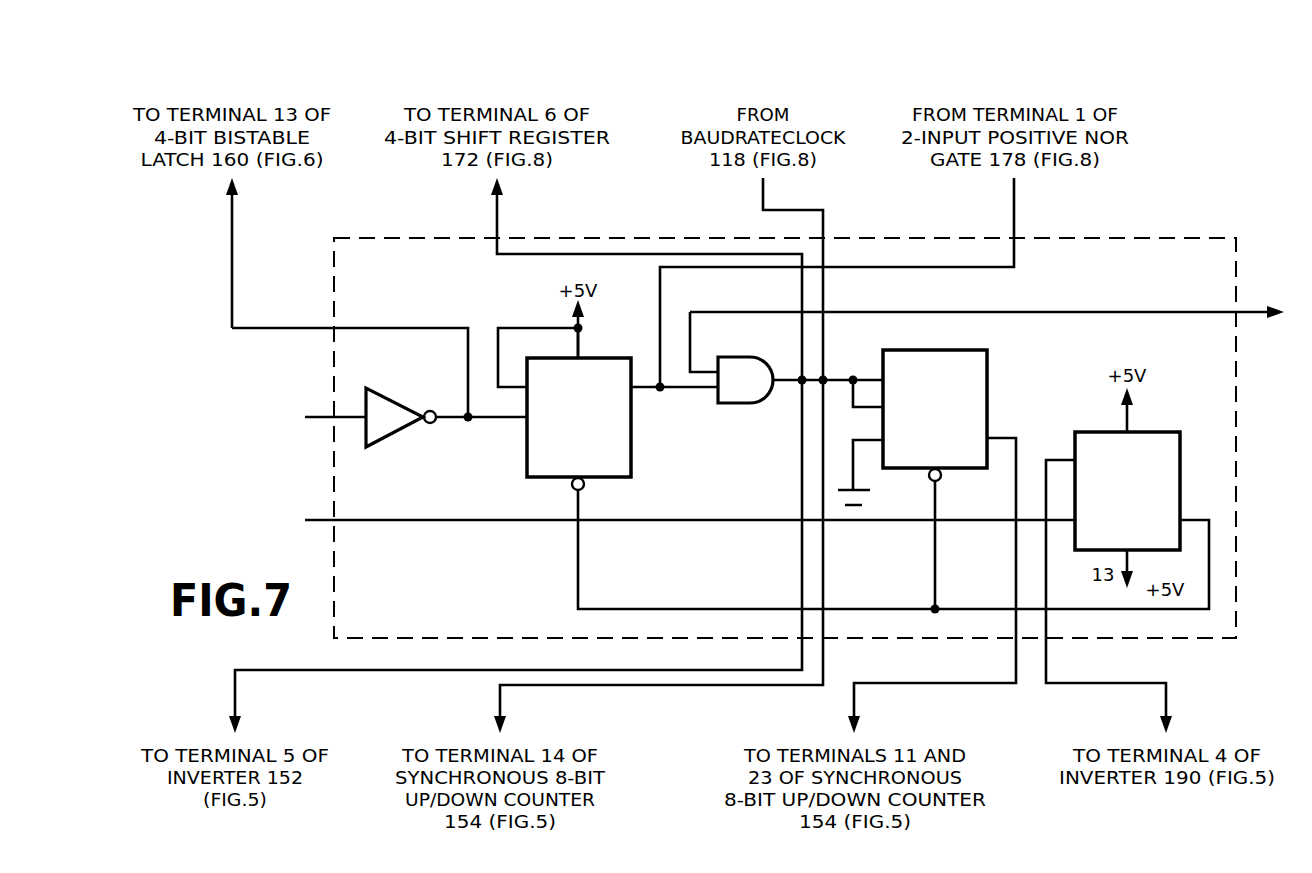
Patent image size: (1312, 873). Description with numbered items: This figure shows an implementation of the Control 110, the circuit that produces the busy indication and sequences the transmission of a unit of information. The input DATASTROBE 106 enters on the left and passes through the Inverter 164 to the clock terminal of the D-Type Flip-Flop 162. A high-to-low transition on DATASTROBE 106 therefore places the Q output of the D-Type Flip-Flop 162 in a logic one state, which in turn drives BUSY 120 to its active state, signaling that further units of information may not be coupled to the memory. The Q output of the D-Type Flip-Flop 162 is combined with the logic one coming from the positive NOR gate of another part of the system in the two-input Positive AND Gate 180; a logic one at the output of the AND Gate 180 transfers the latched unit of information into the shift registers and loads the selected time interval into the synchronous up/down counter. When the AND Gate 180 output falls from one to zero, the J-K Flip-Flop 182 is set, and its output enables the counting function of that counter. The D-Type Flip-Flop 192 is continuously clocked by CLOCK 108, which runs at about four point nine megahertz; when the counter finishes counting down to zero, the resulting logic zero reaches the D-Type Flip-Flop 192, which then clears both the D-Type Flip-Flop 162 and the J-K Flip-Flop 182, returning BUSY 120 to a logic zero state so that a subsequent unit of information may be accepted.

The DATASTROBE 106 is at (261, 404).
The CLOCK 108 is at (297, 509).
The Control 110 is at (1209, 238).
The BUSY 120 is at (1293, 307).
The D-Type Flip-Flop 162 is at (527, 425).
The Inverter 164 is at (405, 428).
The 2-input Positive AND Gate 180 is at (767, 402).
The J-K Flip-Flop 182 is at (928, 349).
The D-Type Flip-Flop 192 is at (1182, 436).